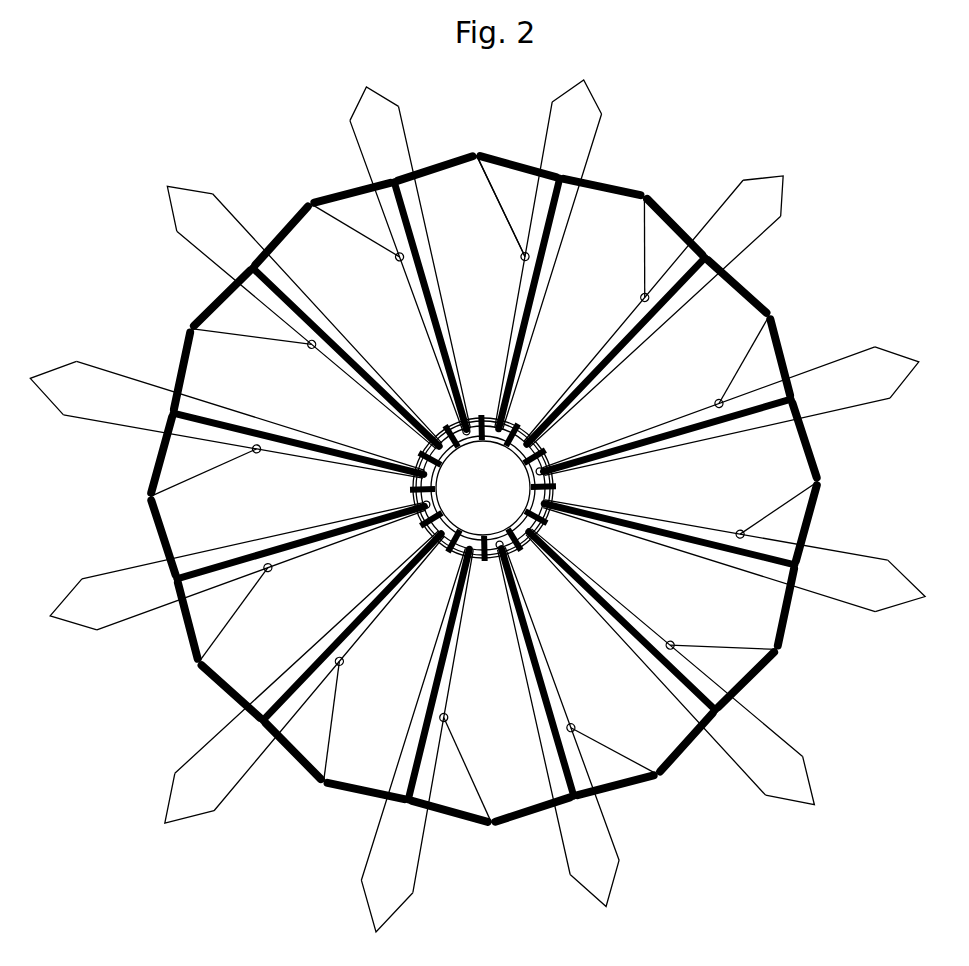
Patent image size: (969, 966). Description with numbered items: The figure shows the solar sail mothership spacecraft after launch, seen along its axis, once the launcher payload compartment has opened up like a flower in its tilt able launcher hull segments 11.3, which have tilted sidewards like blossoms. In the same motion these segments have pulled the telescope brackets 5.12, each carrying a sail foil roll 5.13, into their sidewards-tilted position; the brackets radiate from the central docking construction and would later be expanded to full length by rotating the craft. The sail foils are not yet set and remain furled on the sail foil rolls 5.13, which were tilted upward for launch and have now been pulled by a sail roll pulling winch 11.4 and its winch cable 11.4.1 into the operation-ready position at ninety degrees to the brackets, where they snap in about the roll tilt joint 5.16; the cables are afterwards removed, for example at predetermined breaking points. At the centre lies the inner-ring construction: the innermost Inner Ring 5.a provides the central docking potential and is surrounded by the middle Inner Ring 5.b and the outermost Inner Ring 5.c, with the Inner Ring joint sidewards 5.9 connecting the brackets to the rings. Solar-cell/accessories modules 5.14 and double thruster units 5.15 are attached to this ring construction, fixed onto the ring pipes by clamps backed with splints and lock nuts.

The sail foil rolls 5.13 is at (454, 150).
The roll tilt joint 5.16 is at (391, 192).
The telescope brackets 5.12 is at (578, 385).
The tilt able launcher hull segments 11.3 is at (382, 139).
The sail roll pulling winch 11.4 is at (536, 258).
The winch cable 11.4.1 is at (509, 199).
The double thruster units 5.15 is at (460, 428).
The Inner Ring joint sidewards 5.9 is at (416, 454).
The outermost Inner Ring 5.c is at (540, 531).
The middle Inner Ring 5.b is at (449, 449).
The innermost Inner Ring 5.a is at (440, 507).
The solar-cell/accessories modules 5.14 is at (443, 550).